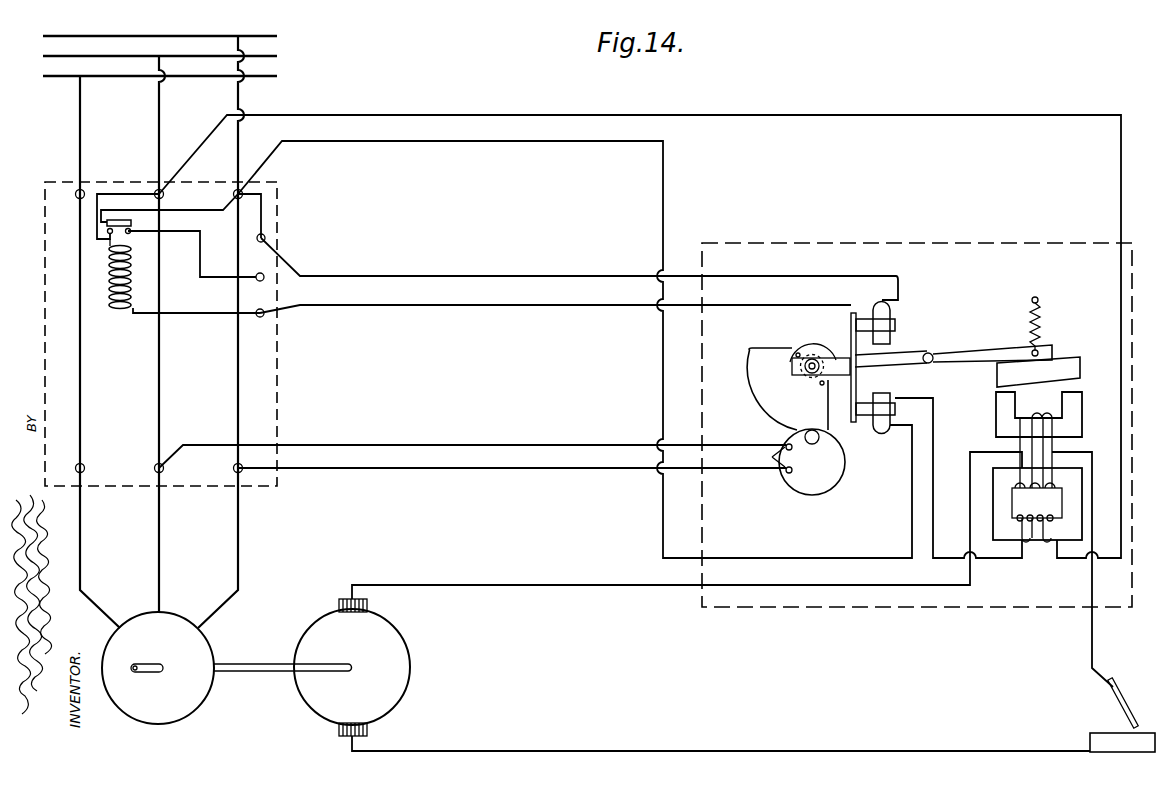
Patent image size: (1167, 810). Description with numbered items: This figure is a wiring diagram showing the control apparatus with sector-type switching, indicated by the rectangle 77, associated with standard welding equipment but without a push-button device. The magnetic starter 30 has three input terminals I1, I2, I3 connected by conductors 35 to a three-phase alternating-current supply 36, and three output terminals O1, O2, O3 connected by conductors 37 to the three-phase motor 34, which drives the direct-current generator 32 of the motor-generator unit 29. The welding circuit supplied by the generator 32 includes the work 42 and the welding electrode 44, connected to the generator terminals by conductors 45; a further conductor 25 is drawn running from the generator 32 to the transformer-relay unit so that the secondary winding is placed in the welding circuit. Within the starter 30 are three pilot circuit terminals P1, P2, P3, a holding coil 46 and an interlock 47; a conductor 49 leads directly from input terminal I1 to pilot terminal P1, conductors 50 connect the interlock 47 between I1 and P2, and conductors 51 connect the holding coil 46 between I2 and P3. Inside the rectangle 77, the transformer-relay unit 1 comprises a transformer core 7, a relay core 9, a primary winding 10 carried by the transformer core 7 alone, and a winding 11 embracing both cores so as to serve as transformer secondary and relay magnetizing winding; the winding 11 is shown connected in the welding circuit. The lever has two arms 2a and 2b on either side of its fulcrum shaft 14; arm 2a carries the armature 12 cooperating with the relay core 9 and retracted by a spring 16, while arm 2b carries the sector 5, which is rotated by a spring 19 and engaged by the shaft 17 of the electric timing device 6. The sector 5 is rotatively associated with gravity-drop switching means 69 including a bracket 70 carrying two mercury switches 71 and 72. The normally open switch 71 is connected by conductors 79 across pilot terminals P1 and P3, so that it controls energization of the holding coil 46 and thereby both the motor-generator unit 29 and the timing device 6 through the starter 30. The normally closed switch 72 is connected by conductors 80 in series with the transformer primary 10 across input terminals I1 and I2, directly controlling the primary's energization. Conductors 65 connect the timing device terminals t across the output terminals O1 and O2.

The 3-phase alternating-current supply 36 is at (133, 73).
The conductors 35 is at (238, 97).
The magnetic starter 30 is at (45, 316).
The conductor 49 is at (263, 200).
The conductors 50 is at (210, 212).
The conductors 51 is at (97, 208).
The interlock 47 is at (130, 234).
The holding coil 46 is at (121, 311).
The conductors 79 is at (506, 306).
The conductors 65 is at (489, 446).
The conductors 80 is at (554, 140).
The conductors 37 is at (238, 546).
The 3-phase motor 34 is at (196, 702).
The motor-generator unit 29 is at (270, 684).
The direct-current generator 32 is at (404, 665).
The conductor 25 is at (572, 586).
The conductors 45 is at (550, 750).
The rectangle 77 is at (818, 243).
The bracket 70 is at (843, 375).
The mercury switch 71 is at (922, 299).
The gravity-drop switching means 69 is at (892, 341).
The mercury switch 72 is at (882, 432).
The sector 5 is at (760, 401).
The spring 19 is at (808, 352).
The pivotal arm 2b is at (893, 361).
The fulcrum or supporting shaft 14 is at (934, 356).
The pivotal arm 2a is at (988, 352).
The spring 16 is at (1040, 313).
The armature 12 is at (1070, 360).
The relay core 9 is at (1083, 411).
The transformer core 7 is at (1070, 496).
The winding 11 is at (1012, 497).
The winding 10 is at (1026, 526).
The electric timing device 6 is at (841, 477).
The shaft 17 is at (819, 442).
The transformer-relay unit 1 is at (807, 486).
The welding electrode 44 is at (1126, 703).
The work 42 is at (1097, 734).
The input terminal I1 is at (236, 190).
The input terminal I2 is at (156, 190).
The input terminal I3 is at (78, 190).
The output terminal O1 is at (233, 468).
The output terminal O2 is at (154, 468).
The output terminal O3 is at (75, 468).
The pilot circuit terminal P1 is at (265, 239).
The pilot circuit terminal P2 is at (264, 278).
The pilot circuit terminal P3 is at (261, 318).
The timing device terminals t is at (770, 457).